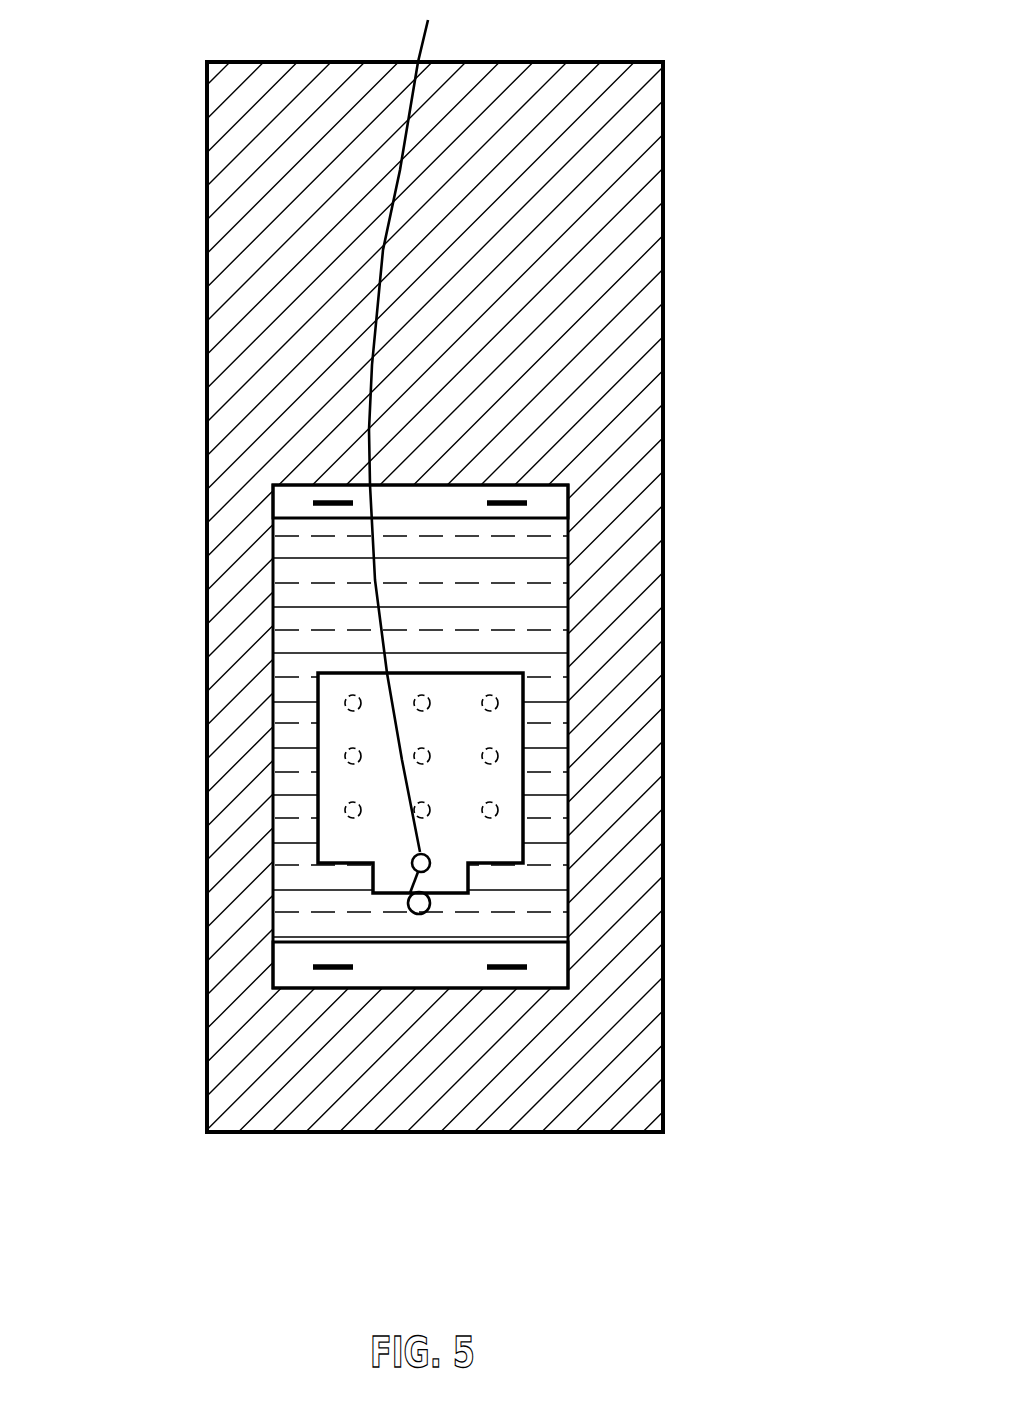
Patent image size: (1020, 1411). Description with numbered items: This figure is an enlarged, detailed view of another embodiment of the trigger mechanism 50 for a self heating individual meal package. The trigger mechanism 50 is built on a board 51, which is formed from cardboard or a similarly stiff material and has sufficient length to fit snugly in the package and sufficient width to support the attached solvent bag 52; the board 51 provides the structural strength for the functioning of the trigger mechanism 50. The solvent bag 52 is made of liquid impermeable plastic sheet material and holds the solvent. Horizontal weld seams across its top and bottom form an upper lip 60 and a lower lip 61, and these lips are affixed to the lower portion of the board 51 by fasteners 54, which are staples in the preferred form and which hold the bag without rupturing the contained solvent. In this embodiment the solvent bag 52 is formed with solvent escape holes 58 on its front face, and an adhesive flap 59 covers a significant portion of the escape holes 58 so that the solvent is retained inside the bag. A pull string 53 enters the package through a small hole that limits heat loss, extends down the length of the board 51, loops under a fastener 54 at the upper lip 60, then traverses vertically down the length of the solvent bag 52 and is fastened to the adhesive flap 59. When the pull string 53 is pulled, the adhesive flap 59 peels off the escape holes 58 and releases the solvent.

The trigger mechanism 50 is at (358, 597).
The board 51 is at (510, 600).
The solvent bag 52 is at (549, 717).
The pull string 53 is at (596, 467).
The fastener 54 is at (553, 693).
The solvent escape holes 58 is at (573, 783).
The adhesive flap 59 is at (585, 700).
The upper lip 60 is at (624, 378).
The lower lip 61 is at (413, 1106).